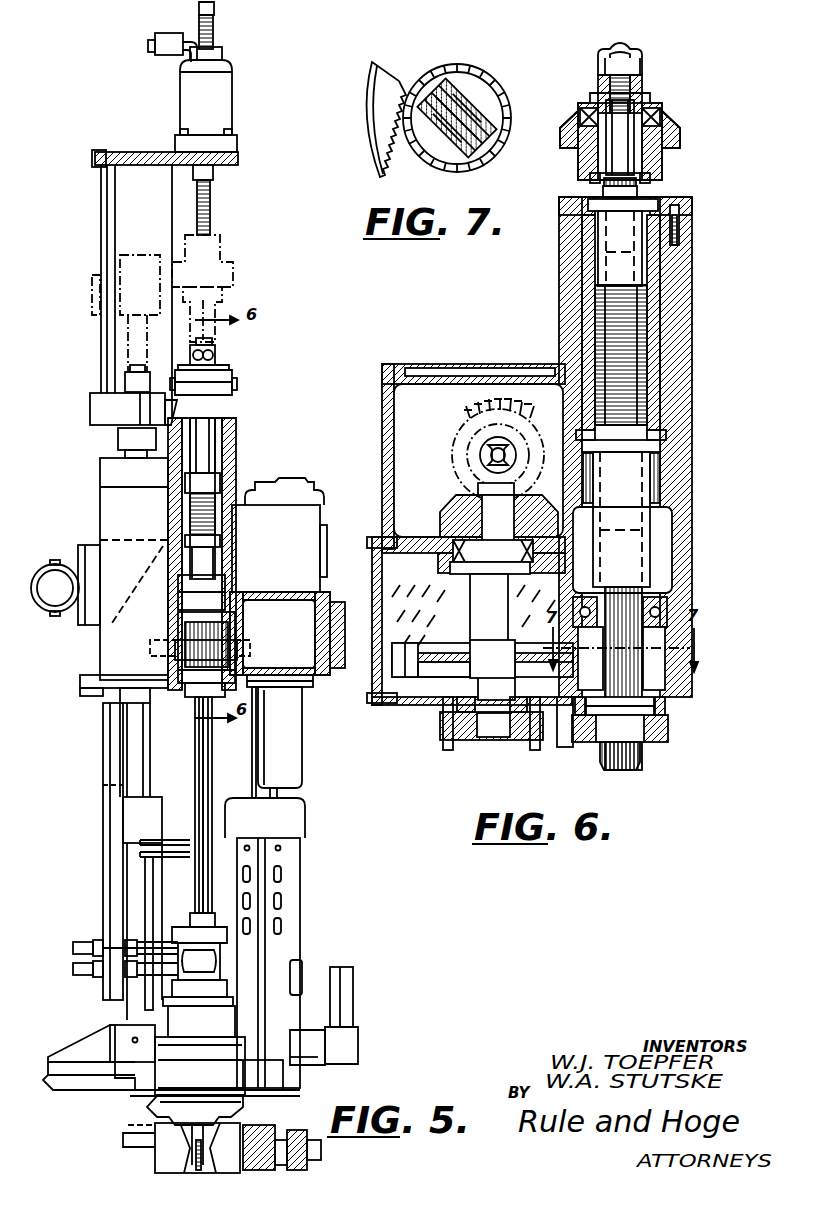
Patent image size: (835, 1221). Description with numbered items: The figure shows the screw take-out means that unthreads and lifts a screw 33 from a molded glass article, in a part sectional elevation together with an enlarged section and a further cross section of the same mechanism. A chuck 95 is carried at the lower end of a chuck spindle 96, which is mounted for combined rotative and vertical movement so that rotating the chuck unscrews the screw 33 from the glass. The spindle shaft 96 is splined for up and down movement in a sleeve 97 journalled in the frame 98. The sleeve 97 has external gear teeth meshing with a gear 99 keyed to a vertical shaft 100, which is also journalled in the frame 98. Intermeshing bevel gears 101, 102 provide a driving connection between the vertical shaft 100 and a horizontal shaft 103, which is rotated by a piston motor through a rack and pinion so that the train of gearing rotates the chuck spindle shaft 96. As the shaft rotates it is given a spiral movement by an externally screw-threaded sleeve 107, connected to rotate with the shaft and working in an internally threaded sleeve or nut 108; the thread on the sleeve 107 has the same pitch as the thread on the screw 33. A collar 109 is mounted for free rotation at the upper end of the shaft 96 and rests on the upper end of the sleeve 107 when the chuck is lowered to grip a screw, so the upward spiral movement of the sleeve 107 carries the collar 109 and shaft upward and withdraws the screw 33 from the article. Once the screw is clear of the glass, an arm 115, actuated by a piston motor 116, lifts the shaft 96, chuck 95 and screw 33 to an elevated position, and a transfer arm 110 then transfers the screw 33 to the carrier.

In FIG. 5, the screw 33 is at (190, 1138).
In FIG. 5, the chuck 95 is at (158, 1106).
In FIG. 5, the chuck spindle 96 is at (197, 740).
In FIG. 7, the chuck spindle 96 is at (470, 60).
In FIG. 6, the chuck spindle 96 is at (630, 768).
In FIG. 5, the sleeve 97 is at (237, 628).
In FIG. 6, the sleeve 97 is at (645, 674).
In FIG. 5, the frame 98 is at (234, 561).
In FIG. 6, the frame 98 is at (692, 590).
In FIG. 7, the gear 99 is at (372, 157).
In FIG. 6, the gear 99 is at (440, 665).
In FIG. 6, the vertical shaft 100 is at (483, 597).
In FIG. 6, the bevel gear 101 is at (448, 499).
In FIG. 6, the bevel gear 102 is at (470, 408).
In FIG. 6, the horizontal shaft 103 is at (488, 454).
In FIG. 5, the externally screw-threaded sleeve 107 is at (189, 510).
In FIG. 7, the externally screw-threaded sleeve 107 is at (503, 90).
In FIG. 6, the externally screw-threaded sleeve 107 is at (650, 192).
In FIG. 5, the internally threaded sleeve 108 is at (213, 470).
In FIG. 6, the internally threaded sleeve 108 is at (590, 322).
In FIG. 5, the collar 109 is at (233, 385).
In FIG. 6, the collar 109 is at (680, 130).
In FIG. 5, the transfer arm 110 is at (290, 937).
In FIG. 5, the arm 115 is at (95, 403).
In FIG. 5, the piston motor 116 is at (100, 498).